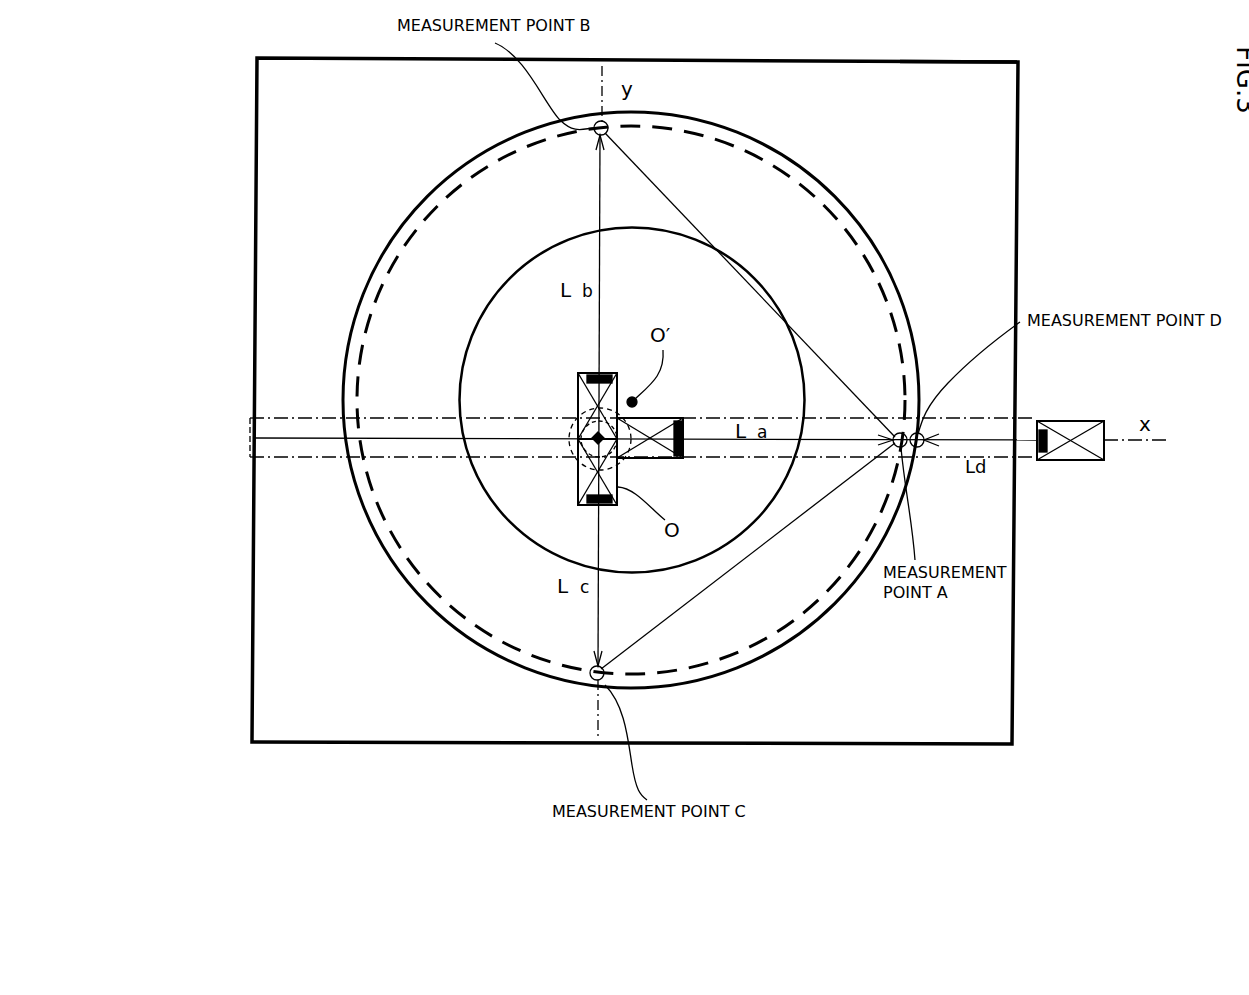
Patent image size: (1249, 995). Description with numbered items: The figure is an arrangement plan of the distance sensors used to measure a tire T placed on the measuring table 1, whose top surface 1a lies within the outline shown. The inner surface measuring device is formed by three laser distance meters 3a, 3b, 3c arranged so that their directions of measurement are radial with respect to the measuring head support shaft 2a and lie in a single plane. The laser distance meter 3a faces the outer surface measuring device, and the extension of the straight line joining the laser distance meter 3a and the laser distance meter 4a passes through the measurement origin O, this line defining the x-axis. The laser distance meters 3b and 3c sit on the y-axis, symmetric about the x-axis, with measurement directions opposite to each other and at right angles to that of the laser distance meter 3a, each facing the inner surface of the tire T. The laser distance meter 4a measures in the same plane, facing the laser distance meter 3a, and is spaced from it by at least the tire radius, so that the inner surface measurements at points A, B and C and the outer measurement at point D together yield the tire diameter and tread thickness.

The measuring table 1 is at (1016, 663).
The table surface 1a is at (942, 78).
The measuring head support shaft 2a is at (277, 457).
The laser distance meter 3a is at (673, 420).
The laser distance meter 3b is at (583, 396).
The laser distance meter 3c is at (582, 467).
The laser distance meter 4a is at (1073, 461).
The tire T is at (822, 323).